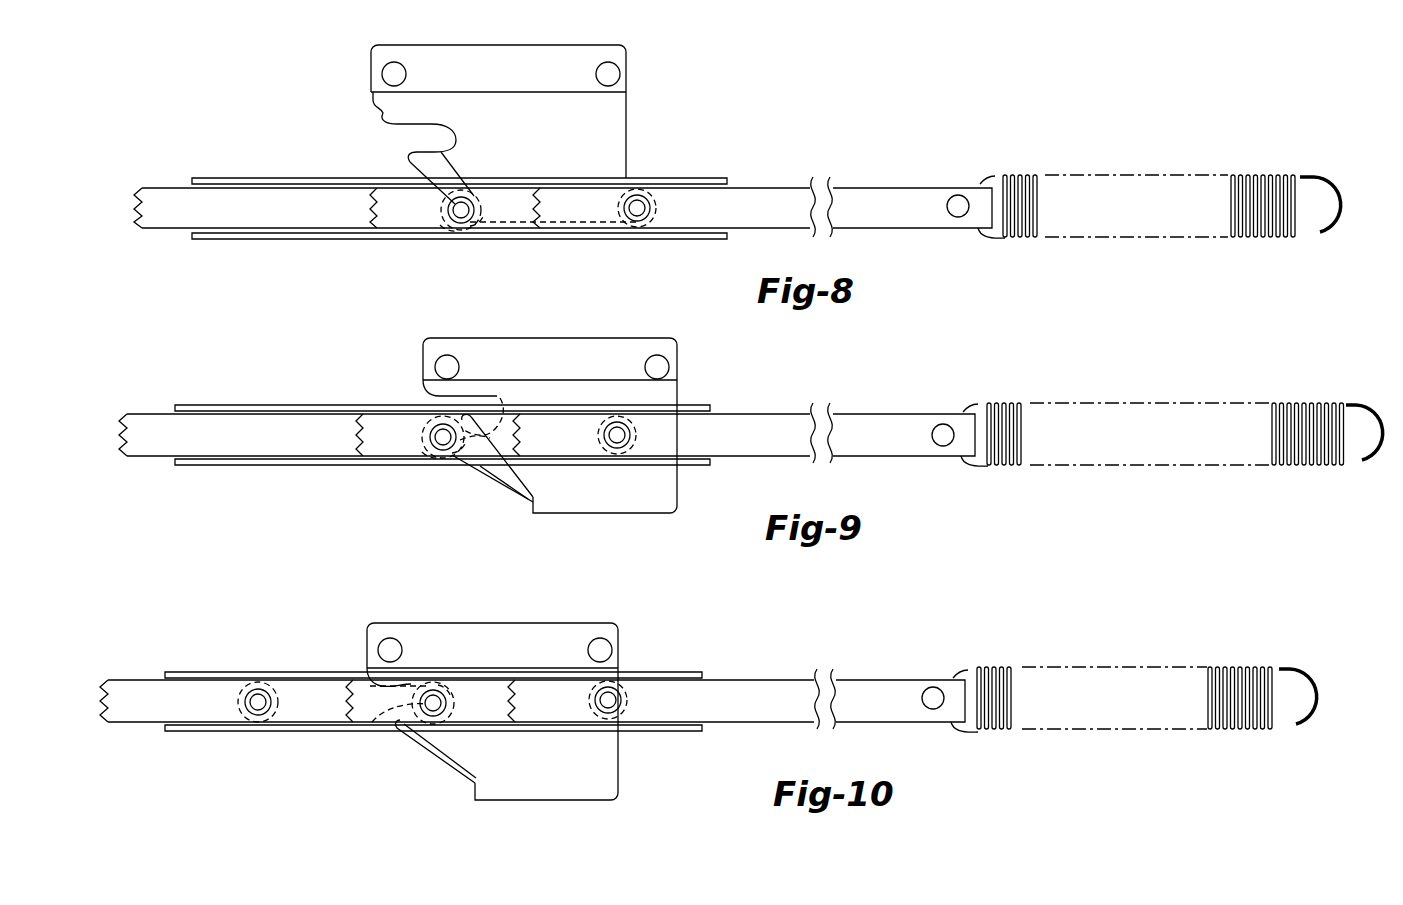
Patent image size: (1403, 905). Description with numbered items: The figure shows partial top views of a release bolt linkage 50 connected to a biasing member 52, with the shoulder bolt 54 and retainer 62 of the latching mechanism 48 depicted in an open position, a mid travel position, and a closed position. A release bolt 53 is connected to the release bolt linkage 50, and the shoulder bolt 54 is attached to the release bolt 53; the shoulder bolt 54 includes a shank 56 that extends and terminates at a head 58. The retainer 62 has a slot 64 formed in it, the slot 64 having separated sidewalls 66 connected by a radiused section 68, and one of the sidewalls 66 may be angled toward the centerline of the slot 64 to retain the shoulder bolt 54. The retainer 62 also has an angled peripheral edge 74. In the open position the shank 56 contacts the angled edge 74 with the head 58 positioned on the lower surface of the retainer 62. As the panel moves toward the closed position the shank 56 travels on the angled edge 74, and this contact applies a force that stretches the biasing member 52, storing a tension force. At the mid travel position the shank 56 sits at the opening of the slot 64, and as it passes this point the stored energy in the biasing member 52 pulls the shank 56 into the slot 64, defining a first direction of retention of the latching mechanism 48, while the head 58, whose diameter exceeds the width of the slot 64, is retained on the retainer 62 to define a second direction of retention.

In FIG. 8, the latching mechanism 48 is at (293, 57).
In FIG. 9, the latching mechanism 48 is at (341, 289).
In FIG. 10, the latching mechanism 48 is at (293, 568).
In FIG. 8, the release bolt linkage 50 is at (661, 177).
In FIG. 9, the release bolt linkage 50 is at (699, 408).
In FIG. 10, the release bolt linkage 50 is at (249, 673).
In FIG. 8, the biasing member 52 is at (1153, 175).
In FIG. 9, the biasing member 52 is at (1148, 416).
In FIG. 10, the biasing member 52 is at (1153, 668).
In FIG. 8, the release bolt 53 is at (358, 240).
In FIG. 9, the release bolt 53 is at (330, 462).
In FIG. 10, the release bolt 53 is at (270, 733).
In FIG. 8, the shoulder bolt 54 is at (440, 205).
In FIG. 9, the shoulder bolt 54 is at (425, 435).
In FIG. 10, the shoulder bolt 54 is at (455, 707).
In FIG. 8, the shank 56 is at (475, 230).
In FIG. 9, the shank 56 is at (460, 460).
In FIG. 10, the shank 56 is at (440, 688).
In FIG. 8, the head 58 is at (452, 232).
In FIG. 9, the head 58 is at (430, 460).
In FIG. 10, the head 58 is at (376, 720).
In FIG. 8, the retainer 62 is at (545, 45).
In FIG. 9, the retainer 62 is at (554, 338).
In FIG. 10, the retainer 62 is at (515, 623).
In FIG. 8, the slot 64 is at (447, 122).
In FIG. 9, the slot 64 is at (502, 400).
In FIG. 10, the slot 64 is at (398, 677).
In FIG. 8, the sidewalls 66 is at (407, 150).
In FIG. 9, the sidewalls 66 is at (426, 394).
In FIG. 10, the sidewalls 66 is at (372, 689).
In FIG. 8, the radiused section 68 is at (445, 145).
In FIG. 9, the radiused section 68 is at (540, 442).
In FIG. 8, the angled peripheral edge 74 is at (412, 170).
In FIG. 9, the angled peripheral edge 74 is at (507, 480).
In FIG. 10, the angled peripheral edge 74 is at (451, 770).